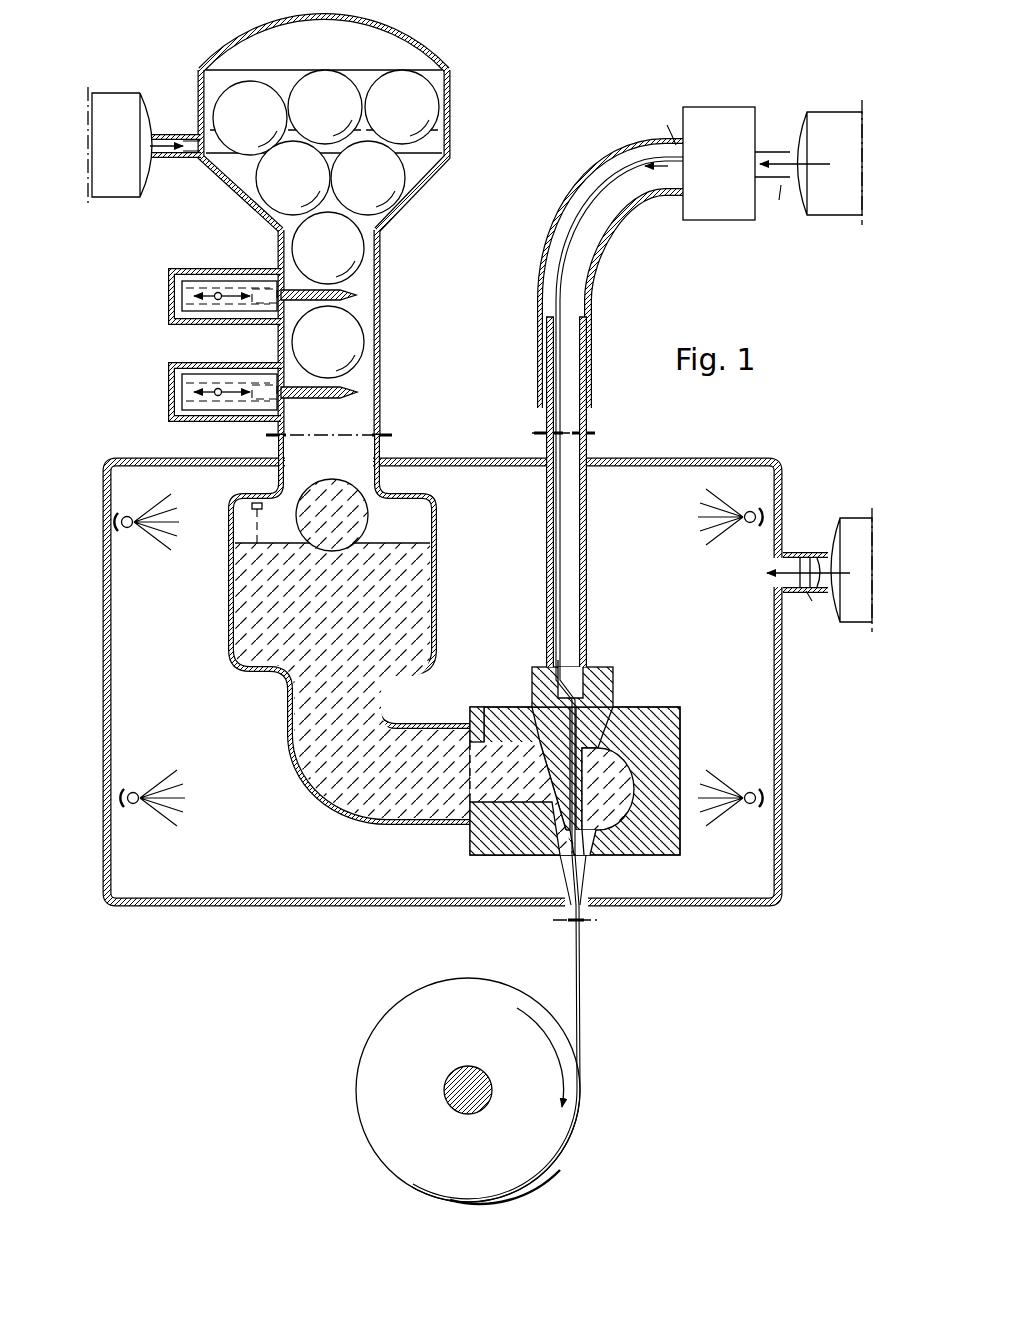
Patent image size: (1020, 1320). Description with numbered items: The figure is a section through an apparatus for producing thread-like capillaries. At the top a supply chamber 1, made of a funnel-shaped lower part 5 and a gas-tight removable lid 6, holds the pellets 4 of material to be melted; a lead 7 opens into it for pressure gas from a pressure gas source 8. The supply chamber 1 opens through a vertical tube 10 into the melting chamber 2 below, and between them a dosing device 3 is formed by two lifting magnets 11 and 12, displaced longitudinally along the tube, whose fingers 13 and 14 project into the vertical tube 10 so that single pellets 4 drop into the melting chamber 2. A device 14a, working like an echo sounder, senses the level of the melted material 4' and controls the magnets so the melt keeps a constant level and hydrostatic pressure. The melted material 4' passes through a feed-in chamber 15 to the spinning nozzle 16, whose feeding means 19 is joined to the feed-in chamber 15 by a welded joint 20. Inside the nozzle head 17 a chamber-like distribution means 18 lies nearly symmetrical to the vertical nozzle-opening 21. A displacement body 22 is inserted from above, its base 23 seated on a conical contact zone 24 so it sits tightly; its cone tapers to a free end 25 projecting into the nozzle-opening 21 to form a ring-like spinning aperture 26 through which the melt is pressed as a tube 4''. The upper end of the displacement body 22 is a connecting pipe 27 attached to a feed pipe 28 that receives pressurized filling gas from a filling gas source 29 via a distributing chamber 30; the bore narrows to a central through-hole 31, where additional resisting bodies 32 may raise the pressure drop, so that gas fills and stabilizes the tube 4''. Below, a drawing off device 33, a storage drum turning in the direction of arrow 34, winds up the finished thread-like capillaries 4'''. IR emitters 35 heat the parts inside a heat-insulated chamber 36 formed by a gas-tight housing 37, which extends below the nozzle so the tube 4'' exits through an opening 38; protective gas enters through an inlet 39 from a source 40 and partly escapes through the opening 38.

The supply chamber 1 is at (444, 150).
The melting chamber 2 is at (437, 518).
The dosing device 3 is at (166, 296).
The pellets 4 is at (326, 209).
The melted material 4' is at (352, 648).
The tube 4'' is at (546, 896).
The thread-like capillaries 4''' is at (520, 1090).
The funnel-shaped lower part 5 is at (448, 140).
The removable lid 6 is at (425, 43).
The lead 7 is at (197, 136).
The pressure gas source 8 is at (135, 145).
The vertical tube 10 is at (381, 328).
The lifting magnet 11 is at (207, 283).
The lifting magnet 12 is at (197, 377).
The finger 13 is at (360, 288).
The finger 14 is at (360, 390).
The device 14a is at (259, 512).
The feed-in chamber 15 is at (393, 813).
The spinning nozzle 16 is at (474, 858).
The nozzle head 17 is at (681, 716).
The distribution means 18 is at (522, 848).
The feeding means 19 is at (478, 708).
The welded joint 20 is at (469, 720).
The nozzle-opening 21 is at (562, 836).
The displacement body 22 is at (616, 665).
The base 23 is at (614, 682).
The contact zone 24 is at (528, 706).
The free end 25 is at (596, 845).
The spinning aperture 26 is at (585, 850).
The connecting pipe 27 is at (588, 476).
The feed pipe 28 is at (537, 256).
The filling gas source 29 is at (808, 162).
The distributing chamber 30 is at (719, 163).
The through-hole 31 is at (572, 690).
The resisting bodies 32 is at (600, 762).
The drawing off device 33 is at (368, 1149).
The arrow 34 is at (530, 1012).
The IR emitters 35 is at (136, 536).
The heat-insulated chamber 36 is at (656, 573).
The housing 37 is at (664, 458).
The opening 38 is at (583, 925).
The inlet 39 is at (803, 552).
The source 40 is at (851, 570).